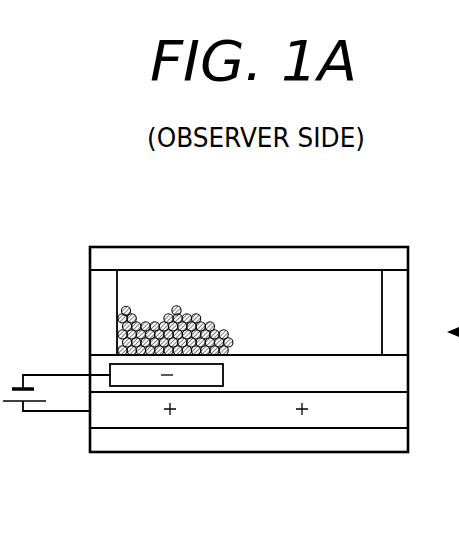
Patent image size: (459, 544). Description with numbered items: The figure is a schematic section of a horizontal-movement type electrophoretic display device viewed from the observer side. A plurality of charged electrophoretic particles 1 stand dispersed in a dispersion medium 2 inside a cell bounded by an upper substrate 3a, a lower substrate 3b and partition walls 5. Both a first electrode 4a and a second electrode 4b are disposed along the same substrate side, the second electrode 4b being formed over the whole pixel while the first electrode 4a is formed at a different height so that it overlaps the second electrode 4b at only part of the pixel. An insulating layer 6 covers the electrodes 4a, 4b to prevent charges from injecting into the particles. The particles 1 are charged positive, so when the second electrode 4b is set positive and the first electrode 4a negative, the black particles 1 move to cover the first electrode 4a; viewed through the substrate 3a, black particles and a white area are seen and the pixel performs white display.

The charged electrophoretic particles 1 is at (181, 305).
The dispersion medium 2 is at (136, 285).
The substrate 3a is at (349, 258).
The substrate 3b is at (330, 440).
The first electrode 4a is at (130, 372).
The second electrode 4b is at (372, 410).
The partition walls 5 is at (105, 295).
The insulating layer 6 is at (390, 373).